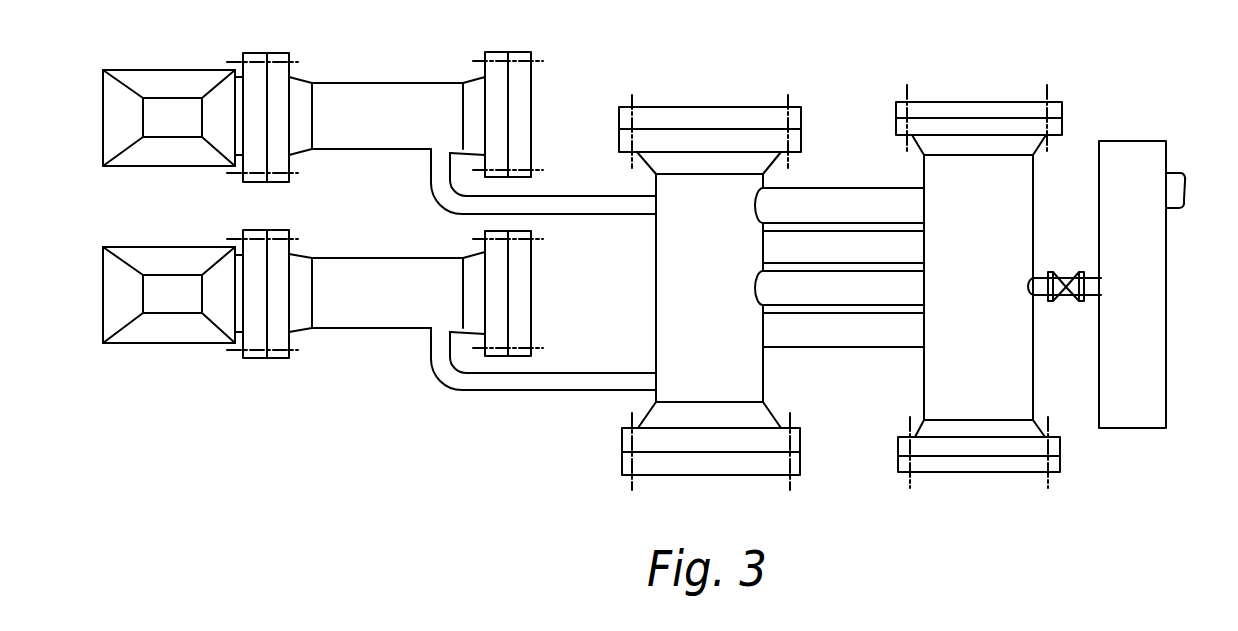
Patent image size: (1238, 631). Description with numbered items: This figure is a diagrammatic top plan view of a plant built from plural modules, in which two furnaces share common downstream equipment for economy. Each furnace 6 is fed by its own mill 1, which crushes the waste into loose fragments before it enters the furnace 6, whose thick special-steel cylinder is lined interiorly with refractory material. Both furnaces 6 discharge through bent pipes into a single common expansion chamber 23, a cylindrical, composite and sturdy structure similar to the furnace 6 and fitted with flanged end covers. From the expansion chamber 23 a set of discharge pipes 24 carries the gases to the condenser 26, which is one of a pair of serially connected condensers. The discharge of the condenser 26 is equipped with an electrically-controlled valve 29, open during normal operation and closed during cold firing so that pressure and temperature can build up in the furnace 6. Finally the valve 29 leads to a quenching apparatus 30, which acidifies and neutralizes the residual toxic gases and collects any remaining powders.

The mill 1 is at (163, 63).
The furnace 6 is at (387, 76).
The expansion chamber 23 is at (650, 265).
The discharge pipes 24 is at (849, 356).
The condenser 26 is at (916, 160).
The electrically-controlled valve 29 is at (1063, 292).
The quenching apparatus 30 is at (1179, 336).